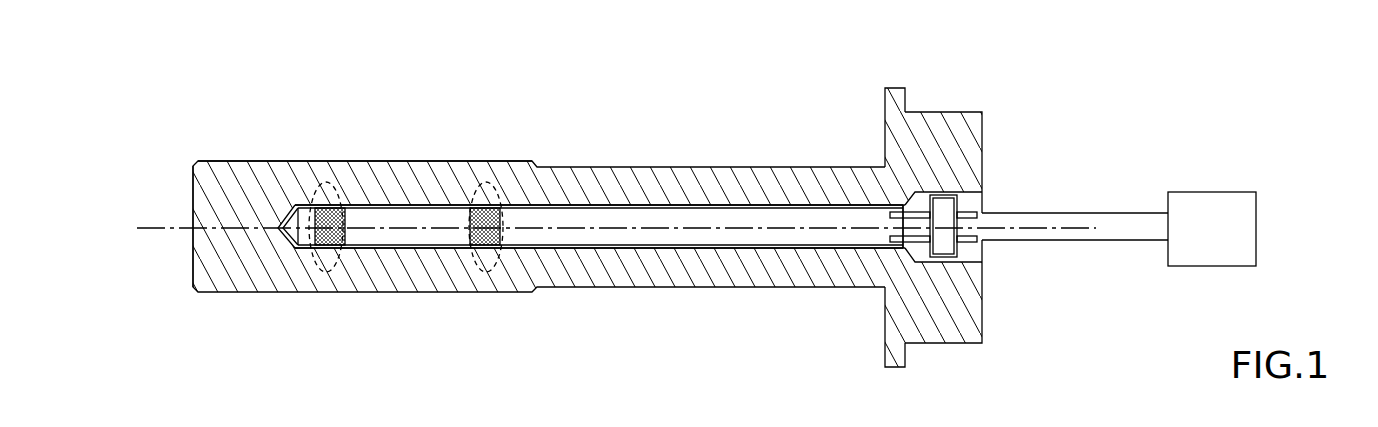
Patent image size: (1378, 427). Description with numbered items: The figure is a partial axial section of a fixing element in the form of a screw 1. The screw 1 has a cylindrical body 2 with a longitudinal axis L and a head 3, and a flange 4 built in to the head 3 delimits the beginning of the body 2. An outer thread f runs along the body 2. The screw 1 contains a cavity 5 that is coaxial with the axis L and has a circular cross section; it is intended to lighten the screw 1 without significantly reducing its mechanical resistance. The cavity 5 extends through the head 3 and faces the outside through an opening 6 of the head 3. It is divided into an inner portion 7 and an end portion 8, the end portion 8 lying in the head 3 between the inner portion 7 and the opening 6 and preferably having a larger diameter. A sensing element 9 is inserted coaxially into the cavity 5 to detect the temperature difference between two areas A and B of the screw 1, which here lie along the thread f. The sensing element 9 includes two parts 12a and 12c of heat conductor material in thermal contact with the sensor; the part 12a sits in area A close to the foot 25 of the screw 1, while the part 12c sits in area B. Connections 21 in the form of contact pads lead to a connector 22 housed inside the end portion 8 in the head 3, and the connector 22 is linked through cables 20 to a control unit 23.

The screw 1 is at (1124, 114).
The body 2 is at (667, 178).
The head 3 is at (965, 112).
The flange 4 is at (898, 88).
The cavity 5 is at (290, 226).
The opening 6 is at (979, 199).
The inner portion 7 is at (705, 210).
The end portion 8 is at (926, 228).
The sensing element 9 is at (637, 225).
The heat conductor part 12a is at (332, 272).
The heat conductor part 12c is at (486, 272).
The cables 20 is at (1080, 212).
The connections 21 is at (923, 203).
The connector 22 is at (968, 253).
The control unit 23 is at (1197, 200).
The foot 25 is at (235, 265).
The area A is at (322, 184).
The area B is at (485, 184).
The outer thread f is at (375, 164).
The longitudinal axis L is at (166, 227).